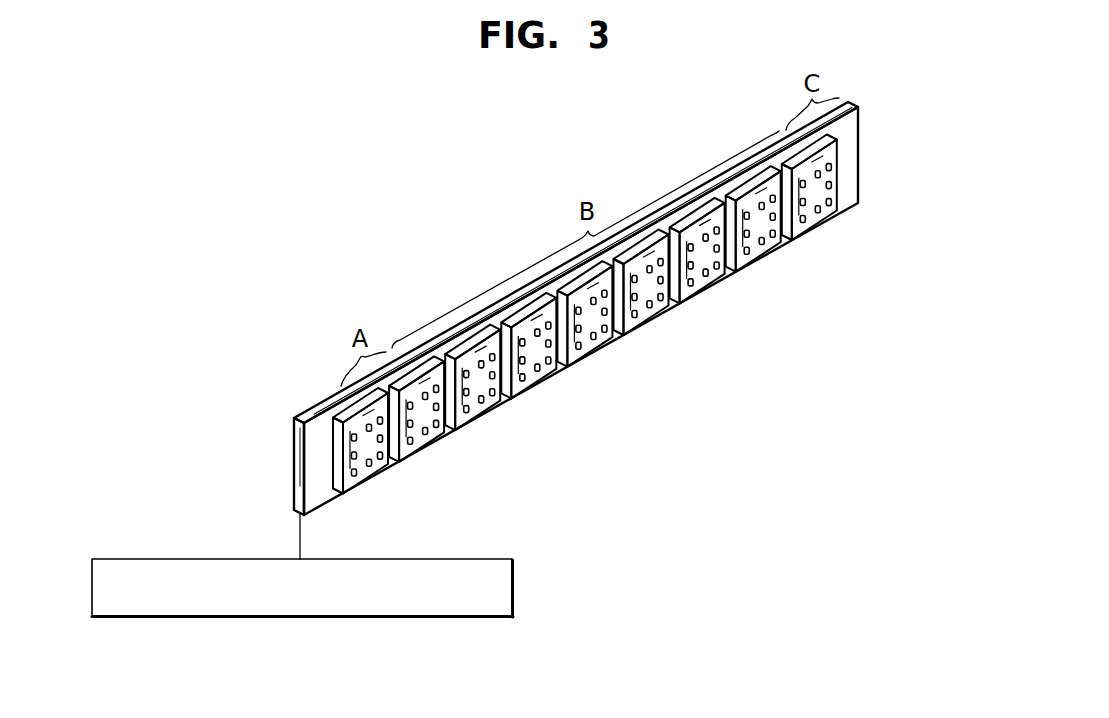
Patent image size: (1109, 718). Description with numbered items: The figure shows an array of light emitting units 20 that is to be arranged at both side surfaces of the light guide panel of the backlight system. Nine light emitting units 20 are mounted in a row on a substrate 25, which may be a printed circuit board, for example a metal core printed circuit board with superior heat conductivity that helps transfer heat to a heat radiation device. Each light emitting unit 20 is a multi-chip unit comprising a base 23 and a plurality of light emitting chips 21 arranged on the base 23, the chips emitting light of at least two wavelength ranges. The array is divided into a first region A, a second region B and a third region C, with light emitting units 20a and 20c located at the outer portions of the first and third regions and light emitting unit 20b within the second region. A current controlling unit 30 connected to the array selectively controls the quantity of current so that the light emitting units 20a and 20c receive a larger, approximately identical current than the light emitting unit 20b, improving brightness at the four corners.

The light emitting unit 20 is at (763, 332).
The light emitting unit in first region A 20a is at (396, 482).
The light emitting unit in second region B 20b is at (537, 393).
The light emitting unit in third region C 20c is at (835, 221).
The light emitting chip 21 is at (664, 298).
The base 23 is at (647, 312).
The substrate 25 is at (465, 326).
The current controlling unit 30 is at (513, 584).